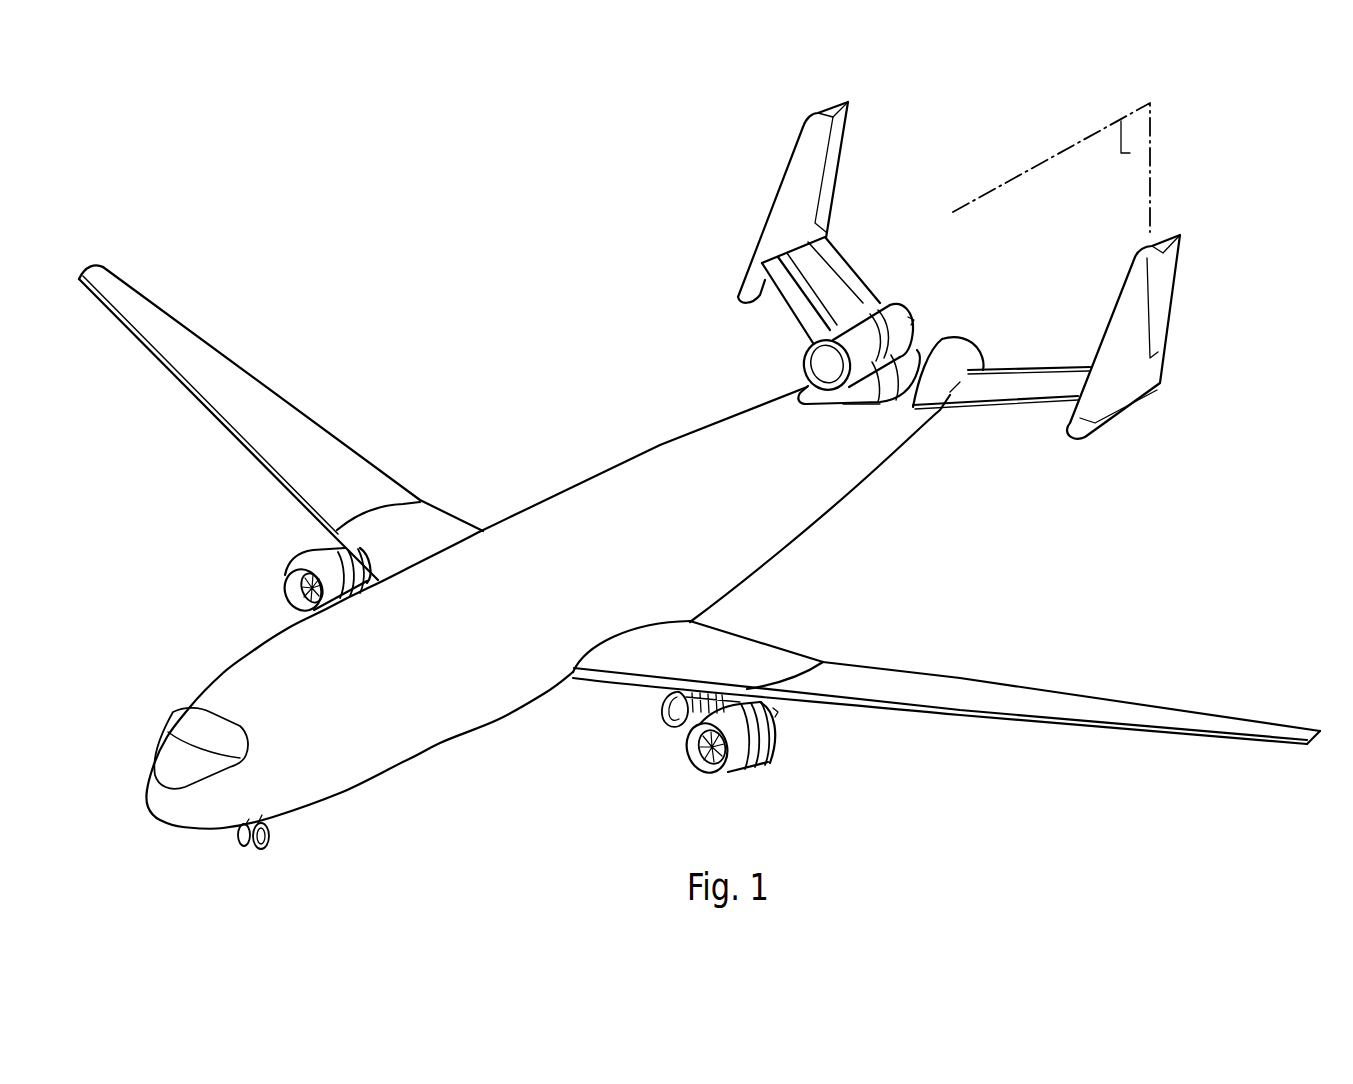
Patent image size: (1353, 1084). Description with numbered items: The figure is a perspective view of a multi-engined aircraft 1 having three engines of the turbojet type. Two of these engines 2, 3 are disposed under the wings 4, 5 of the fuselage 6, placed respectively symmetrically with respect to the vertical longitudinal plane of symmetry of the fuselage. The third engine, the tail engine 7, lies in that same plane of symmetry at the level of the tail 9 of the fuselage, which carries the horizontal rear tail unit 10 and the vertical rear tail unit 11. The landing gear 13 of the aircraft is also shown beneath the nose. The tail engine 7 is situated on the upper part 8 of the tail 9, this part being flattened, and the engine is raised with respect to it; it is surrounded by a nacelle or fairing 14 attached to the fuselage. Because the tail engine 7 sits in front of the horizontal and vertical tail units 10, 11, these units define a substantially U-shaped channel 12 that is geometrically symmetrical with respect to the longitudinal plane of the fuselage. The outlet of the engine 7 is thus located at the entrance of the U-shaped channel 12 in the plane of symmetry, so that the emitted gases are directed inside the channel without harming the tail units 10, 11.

The aircraft 1 is at (493, 403).
The engine 2 is at (763, 757).
The engine 3 is at (283, 580).
The wing 4 is at (990, 718).
The wing 5 is at (207, 410).
The fuselage 6 is at (443, 697).
The tail engine 7 is at (856, 283).
The upper part of the tail 8 is at (791, 397).
The tail 9 is at (903, 408).
The horizontal rear tail unit 10 is at (795, 302).
The vertical rear tail unit 11 is at (802, 168).
The U-shaped channel 12 is at (932, 310).
The landing gear 13 is at (270, 838).
The nacelle or fairing 14 is at (843, 426).